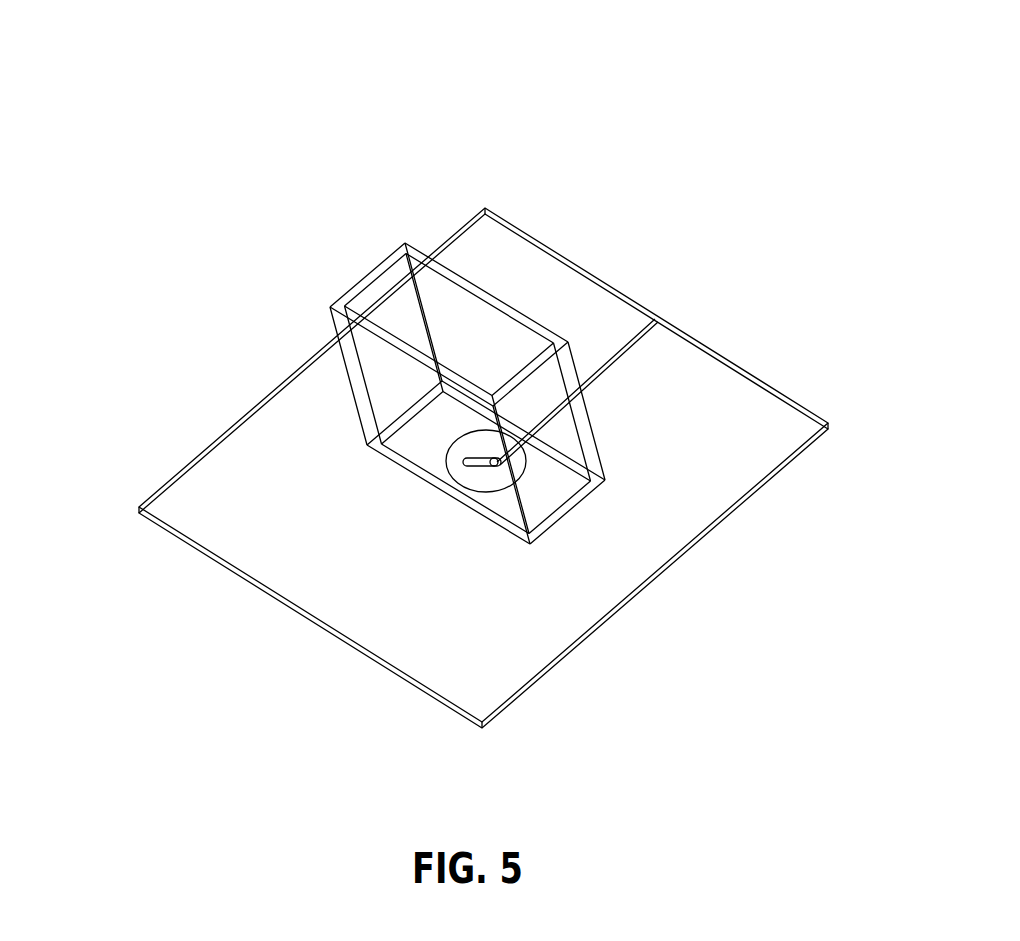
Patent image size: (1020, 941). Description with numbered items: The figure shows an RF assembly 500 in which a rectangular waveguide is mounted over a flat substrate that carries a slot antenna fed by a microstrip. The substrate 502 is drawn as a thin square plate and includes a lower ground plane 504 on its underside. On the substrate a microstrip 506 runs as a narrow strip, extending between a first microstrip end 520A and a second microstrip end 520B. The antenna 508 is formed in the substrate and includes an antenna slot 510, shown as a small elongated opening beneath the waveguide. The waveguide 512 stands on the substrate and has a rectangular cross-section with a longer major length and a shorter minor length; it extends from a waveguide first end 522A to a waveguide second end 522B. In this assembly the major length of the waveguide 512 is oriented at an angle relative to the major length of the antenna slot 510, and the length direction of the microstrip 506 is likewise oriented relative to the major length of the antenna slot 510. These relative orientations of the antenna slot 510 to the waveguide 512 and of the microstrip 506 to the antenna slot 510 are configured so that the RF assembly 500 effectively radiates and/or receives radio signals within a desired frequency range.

The RF assembly 500 is at (172, 79).
The substrate 502 is at (515, 260).
The lower ground plane 504 is at (742, 503).
The microstrip 506 is at (614, 359).
The antenna 508 is at (494, 479).
The antenna slot 510 is at (486, 459).
The waveguide 512 is at (362, 282).
The first microstrip end 520A is at (470, 463).
The second microstrip end 520B is at (614, 354).
The waveguide first end 522A is at (415, 469).
The waveguide second end 522B is at (404, 243).